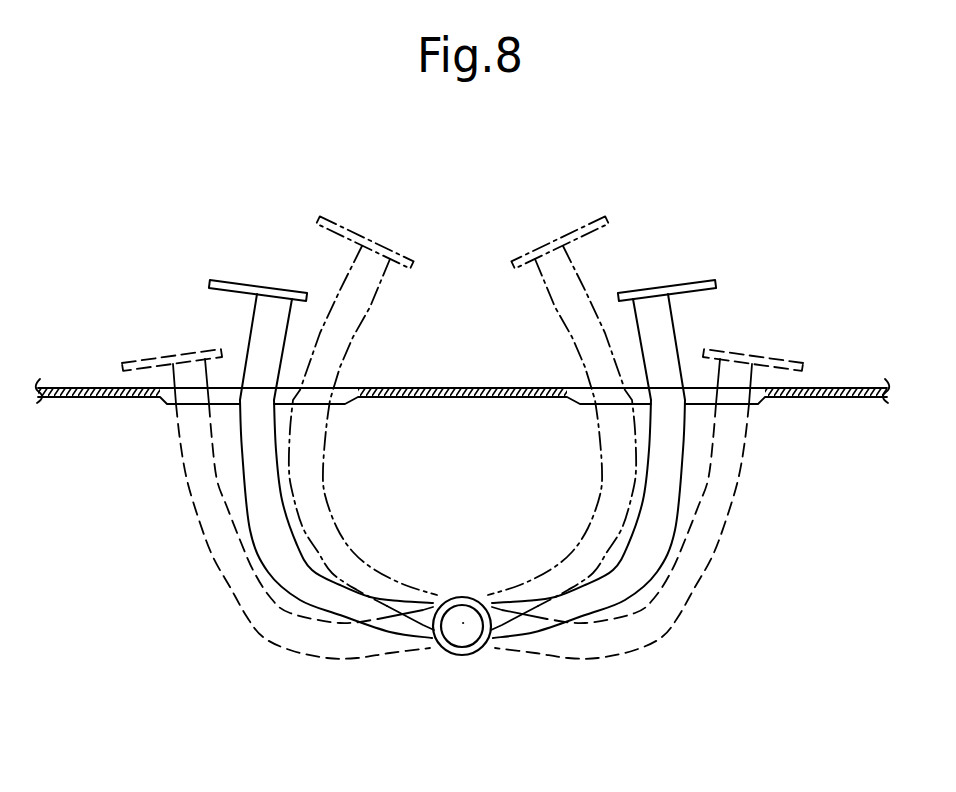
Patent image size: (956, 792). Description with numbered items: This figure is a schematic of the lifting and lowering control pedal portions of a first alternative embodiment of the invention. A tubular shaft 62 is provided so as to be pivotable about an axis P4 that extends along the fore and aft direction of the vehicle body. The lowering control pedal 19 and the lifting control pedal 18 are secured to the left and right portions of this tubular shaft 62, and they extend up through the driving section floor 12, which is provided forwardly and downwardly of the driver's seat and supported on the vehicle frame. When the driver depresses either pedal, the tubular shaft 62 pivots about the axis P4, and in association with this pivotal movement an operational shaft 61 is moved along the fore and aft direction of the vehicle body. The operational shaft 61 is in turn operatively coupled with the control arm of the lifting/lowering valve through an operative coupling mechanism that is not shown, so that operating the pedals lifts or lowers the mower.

The driving section floor 12 is at (83, 387).
The lowering control pedal 19 is at (270, 284).
The lifting control pedal 18 is at (658, 284).
The operational shaft 61 is at (465, 597).
The tubular shaft 62 is at (472, 654).
The axis P4 is at (463, 623).